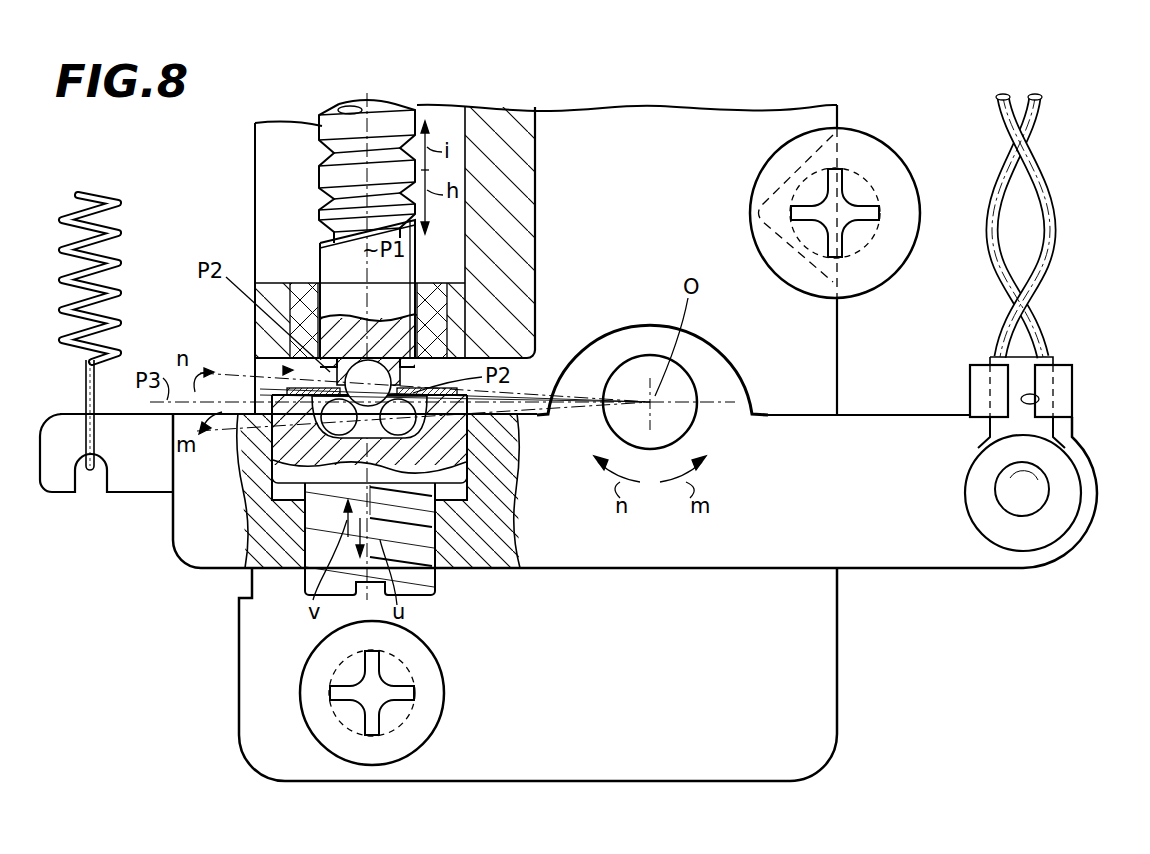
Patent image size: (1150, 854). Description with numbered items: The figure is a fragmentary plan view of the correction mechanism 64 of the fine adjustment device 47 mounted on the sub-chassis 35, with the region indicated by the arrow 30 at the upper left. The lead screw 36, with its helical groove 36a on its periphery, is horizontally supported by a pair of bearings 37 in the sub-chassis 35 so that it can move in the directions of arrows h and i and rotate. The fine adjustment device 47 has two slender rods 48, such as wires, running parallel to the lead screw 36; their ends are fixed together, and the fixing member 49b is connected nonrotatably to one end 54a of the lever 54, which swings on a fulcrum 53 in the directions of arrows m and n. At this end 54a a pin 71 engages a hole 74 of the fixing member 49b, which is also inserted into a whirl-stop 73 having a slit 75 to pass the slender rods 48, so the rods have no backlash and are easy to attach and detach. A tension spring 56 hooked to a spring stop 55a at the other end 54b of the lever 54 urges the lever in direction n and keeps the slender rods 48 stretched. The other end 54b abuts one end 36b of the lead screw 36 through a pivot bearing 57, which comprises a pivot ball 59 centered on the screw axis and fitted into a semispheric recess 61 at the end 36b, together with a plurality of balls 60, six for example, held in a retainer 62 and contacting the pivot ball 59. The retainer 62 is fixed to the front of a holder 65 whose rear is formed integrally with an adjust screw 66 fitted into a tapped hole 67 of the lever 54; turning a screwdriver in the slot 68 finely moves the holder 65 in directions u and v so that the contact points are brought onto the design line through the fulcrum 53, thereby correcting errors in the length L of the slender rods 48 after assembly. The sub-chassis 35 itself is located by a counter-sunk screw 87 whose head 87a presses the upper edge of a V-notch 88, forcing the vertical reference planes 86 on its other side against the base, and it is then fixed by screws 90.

The arrow indicating adjustment direction / housing portion 30 is at (286, 174).
The sub-chassis 35 is at (838, 672).
The lead screw 36 is at (378, 104).
The helical groove 36a is at (332, 185).
The one end of the lead screw 36b is at (537, 294).
The bearings 37 is at (537, 258).
The fine adjustment device 47 is at (1029, 354).
The slender rods 48 is at (1018, 147).
The fixing member 49b is at (1068, 478).
The fulcrum 53 is at (715, 385).
The lever 54 is at (688, 548).
The one end of the lever 54a is at (1050, 556).
The other end of the lever 54b is at (190, 540).
The spring stop 55a is at (52, 475).
The tension spring 56 is at (98, 300).
The pivot bearing 57 is at (262, 362).
The pivot ball 59 is at (537, 332).
The balls 60 is at (455, 437).
The semispheric recess 61 is at (356, 360).
The retainer 62 is at (455, 462).
The correction mechanism 64 is at (293, 583).
The holder 65 is at (466, 545).
The adjust screw 66 is at (420, 592).
The tapped hole 67 is at (307, 596).
The slot 68 is at (362, 594).
The pin 71 is at (1020, 512).
The whirl-stop 73 is at (978, 375).
The hole 74 is at (1040, 468).
The slit 75 is at (1040, 398).
The vertical reference planes 86 is at (239, 662).
The counter-sunk screw 87 is at (792, 165).
The head 87a is at (780, 178).
The V-notch 88 is at (783, 236).
The screws 90 is at (432, 712).